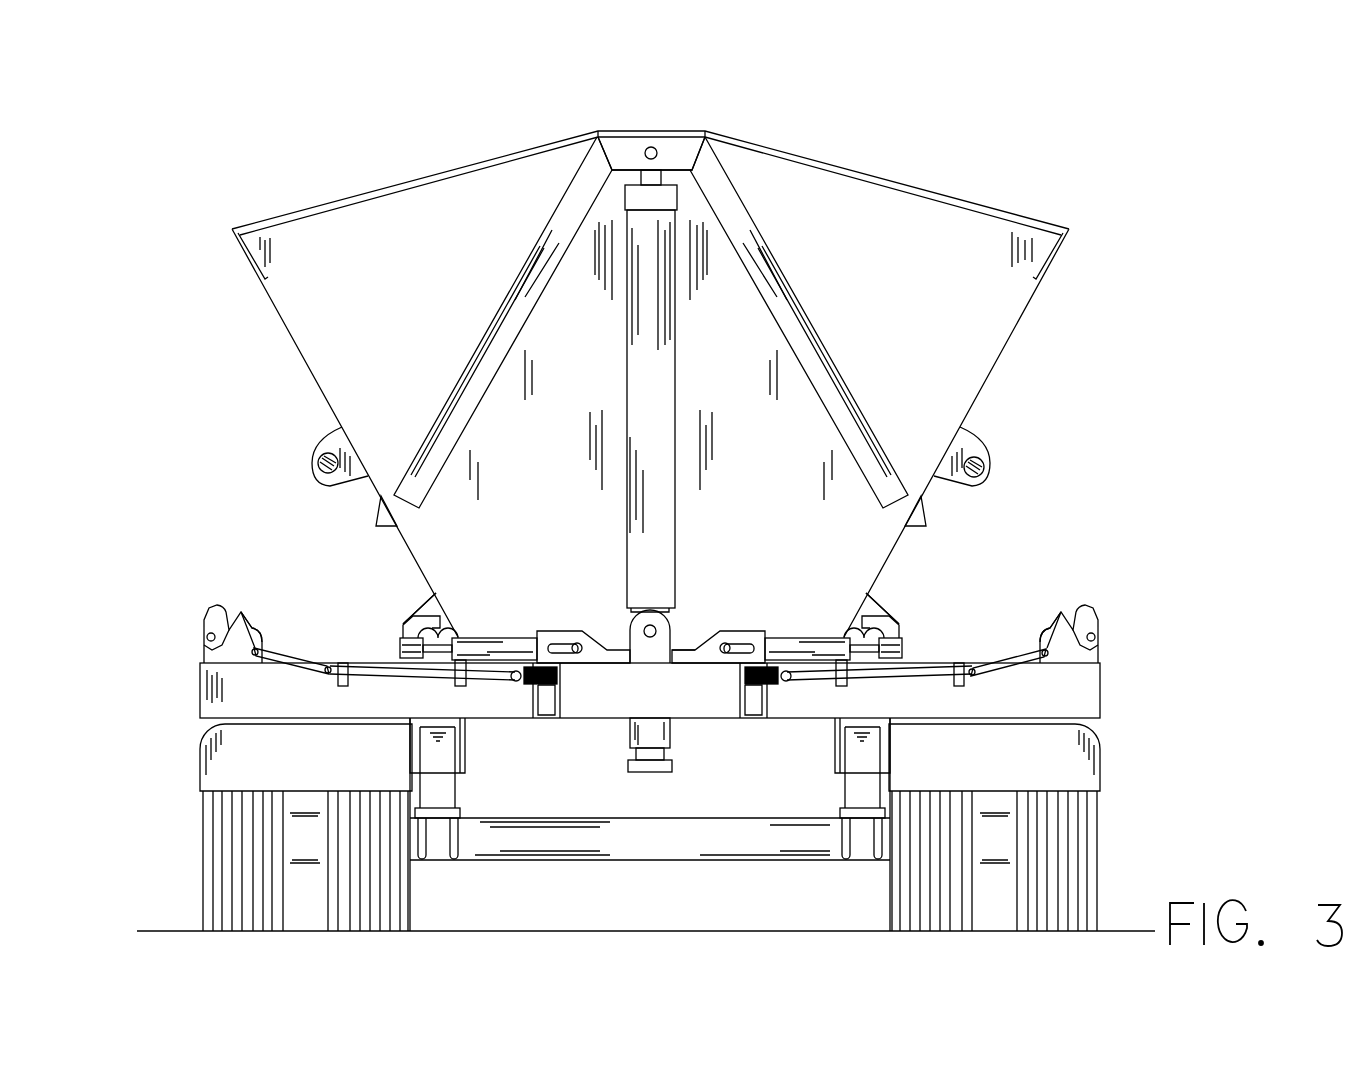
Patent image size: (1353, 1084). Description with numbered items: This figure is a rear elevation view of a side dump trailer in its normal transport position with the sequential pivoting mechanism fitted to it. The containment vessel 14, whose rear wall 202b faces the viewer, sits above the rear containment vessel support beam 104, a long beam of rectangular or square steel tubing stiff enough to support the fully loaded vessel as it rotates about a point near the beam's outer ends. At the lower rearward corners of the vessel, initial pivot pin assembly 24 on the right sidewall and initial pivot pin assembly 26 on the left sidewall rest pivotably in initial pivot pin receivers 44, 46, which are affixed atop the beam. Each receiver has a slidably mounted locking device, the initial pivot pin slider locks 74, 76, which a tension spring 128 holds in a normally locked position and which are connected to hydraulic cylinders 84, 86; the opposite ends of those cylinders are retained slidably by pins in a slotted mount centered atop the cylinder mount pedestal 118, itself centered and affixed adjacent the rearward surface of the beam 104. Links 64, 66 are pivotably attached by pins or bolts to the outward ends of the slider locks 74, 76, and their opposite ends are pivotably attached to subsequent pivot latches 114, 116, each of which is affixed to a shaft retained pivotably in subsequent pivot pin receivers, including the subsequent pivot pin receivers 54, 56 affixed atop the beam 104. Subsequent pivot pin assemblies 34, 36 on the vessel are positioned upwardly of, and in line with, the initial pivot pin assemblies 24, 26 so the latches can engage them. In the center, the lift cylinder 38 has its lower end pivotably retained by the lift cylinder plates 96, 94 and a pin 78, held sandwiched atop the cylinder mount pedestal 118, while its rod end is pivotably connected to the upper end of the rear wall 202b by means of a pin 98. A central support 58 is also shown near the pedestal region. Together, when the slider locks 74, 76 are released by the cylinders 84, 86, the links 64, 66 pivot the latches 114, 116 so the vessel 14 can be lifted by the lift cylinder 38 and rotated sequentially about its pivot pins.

The containment vessel 14 is at (1066, 300).
The initial pivot pin assembly 24 is at (876, 598).
The initial pivot pin assembly 26 is at (414, 598).
The subsequent pivot pin assembly 34 is at (987, 447).
The subsequent pivot pin assembly 36 is at (312, 443).
The lift cylinder 38 is at (678, 362).
The initial pivot pin receiver 44 is at (843, 620).
The initial pivot pin receiver 46 is at (455, 620).
The subsequent pivot pin receiver 54 is at (1040, 618).
The subsequent pivot pin receiver 56 is at (263, 627).
The central support 58 is at (706, 656).
The link 64 is at (1002, 658).
The link 66 is at (278, 656).
The initial pivot pin slider lock 74 is at (936, 679).
The initial pivot pin slider lock 76 is at (350, 681).
The pin 78 is at (652, 626).
The hydraulic cylinder 84 is at (826, 637).
The hydraulic cylinder 86 is at (470, 637).
The lift cylinder plate 94 is at (670, 626).
The lift cylinder plate 96 is at (630, 626).
The pin 98 is at (645, 148).
The rear containment vessel support beam 104 is at (1022, 708).
The subsequent pivot latch 114 is at (1098, 614).
The subsequent pivot latch 116 is at (205, 614).
The cylinder mount pedestal 118 is at (630, 706).
The tension spring 128 is at (660, 146).
The rear wall 202b is at (924, 304).